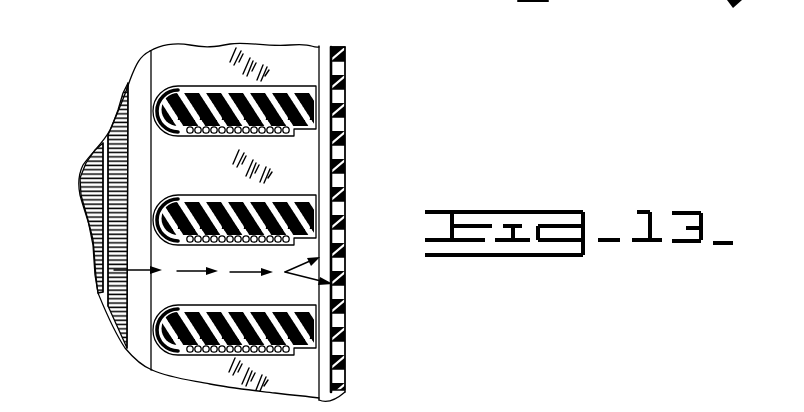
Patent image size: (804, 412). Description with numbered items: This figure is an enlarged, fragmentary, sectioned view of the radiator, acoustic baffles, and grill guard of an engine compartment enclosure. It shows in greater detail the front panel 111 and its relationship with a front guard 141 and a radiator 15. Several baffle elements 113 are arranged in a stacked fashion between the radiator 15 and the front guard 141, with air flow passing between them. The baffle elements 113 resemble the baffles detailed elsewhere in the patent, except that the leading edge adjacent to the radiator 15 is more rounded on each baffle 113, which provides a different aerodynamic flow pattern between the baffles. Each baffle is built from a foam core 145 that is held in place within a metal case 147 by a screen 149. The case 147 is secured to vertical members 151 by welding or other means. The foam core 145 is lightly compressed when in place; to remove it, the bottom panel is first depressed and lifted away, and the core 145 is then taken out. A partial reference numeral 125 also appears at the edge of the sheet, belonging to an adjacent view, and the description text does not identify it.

The radiator 15 is at (93, 143).
The front panel 111 is at (376, 108).
The baffle elements 113 is at (283, 78).
The conduit 125 is at (703, 0).
The front guard 141 is at (346, 146).
The foam core 145 is at (237, 140).
The metal case 147 is at (208, 86).
The screen 149 is at (224, 136).
The vertical members 151 is at (217, 52).